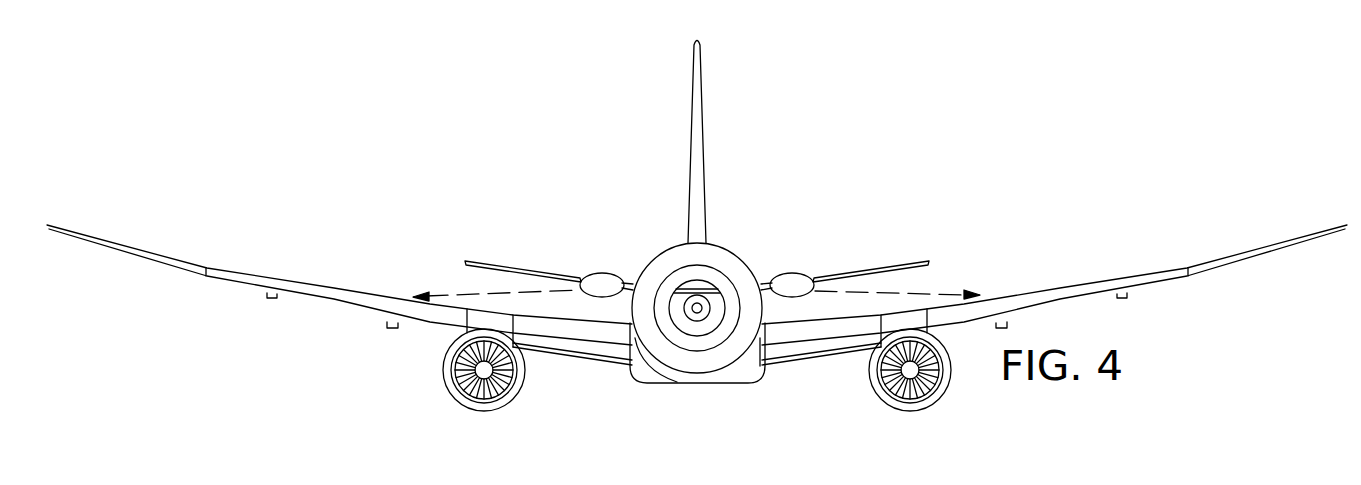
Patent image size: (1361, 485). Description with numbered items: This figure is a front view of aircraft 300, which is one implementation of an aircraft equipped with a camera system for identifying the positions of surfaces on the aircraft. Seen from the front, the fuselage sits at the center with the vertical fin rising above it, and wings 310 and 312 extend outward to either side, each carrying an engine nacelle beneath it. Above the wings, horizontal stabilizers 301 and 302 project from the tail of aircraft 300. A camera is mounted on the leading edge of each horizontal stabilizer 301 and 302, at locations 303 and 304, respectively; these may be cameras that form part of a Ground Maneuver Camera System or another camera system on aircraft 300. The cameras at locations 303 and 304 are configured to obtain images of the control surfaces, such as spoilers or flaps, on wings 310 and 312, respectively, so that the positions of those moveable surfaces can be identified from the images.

The aircraft 300 is at (806, 442).
The horizontal stabilizer 301 is at (904, 262).
The horizontal stabilizer 302 is at (490, 262).
The camera location 303 is at (793, 272).
The camera location 304 is at (602, 272).
The wing 310 is at (1097, 282).
The wing 312 is at (345, 290).